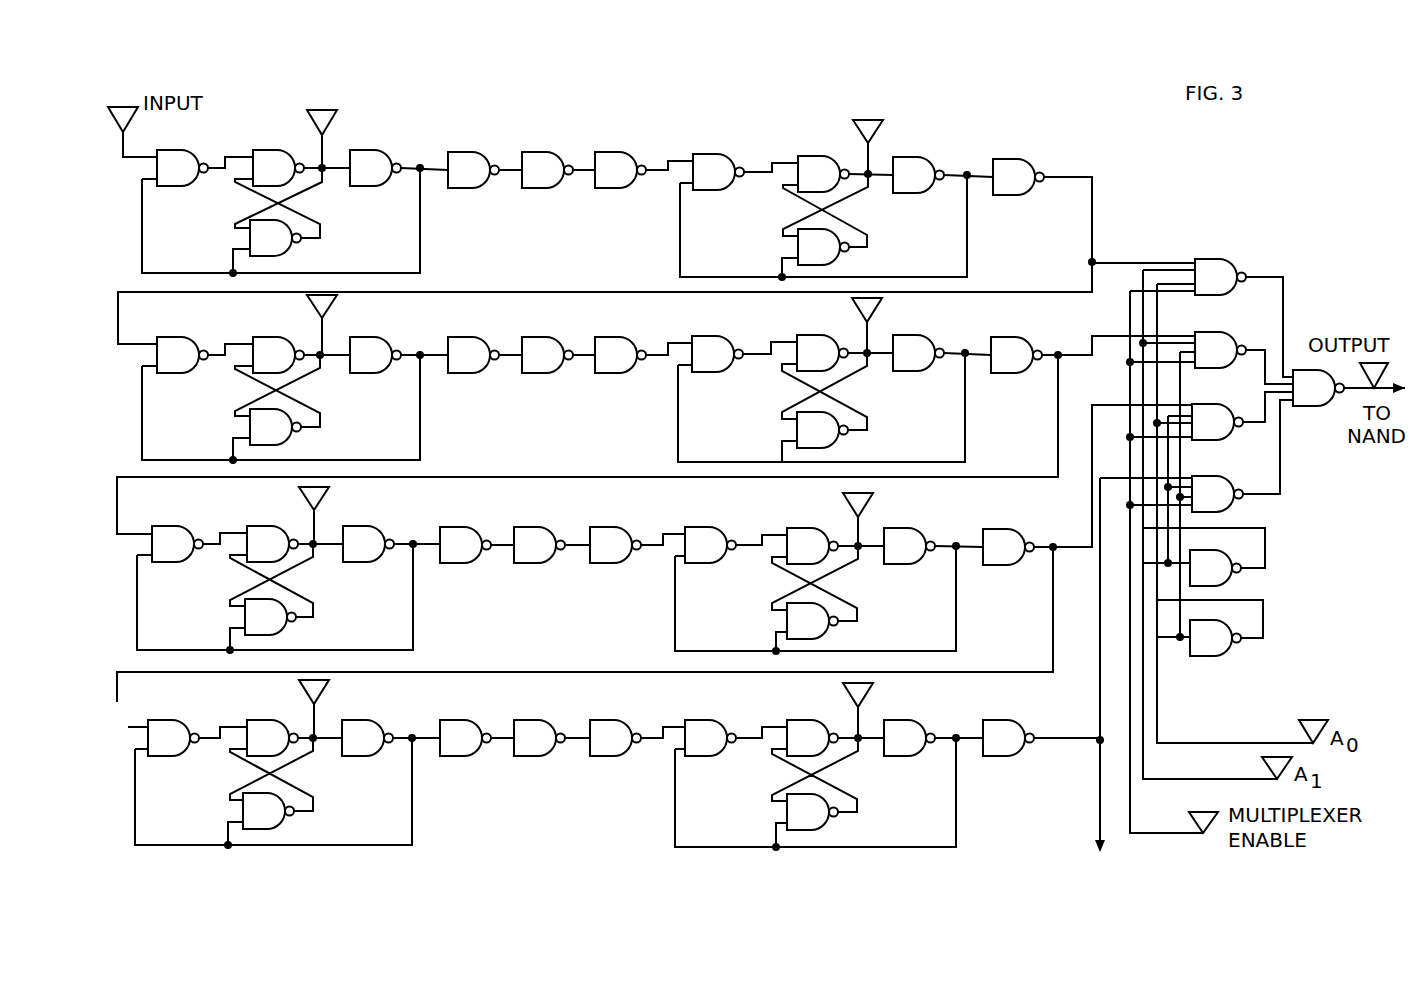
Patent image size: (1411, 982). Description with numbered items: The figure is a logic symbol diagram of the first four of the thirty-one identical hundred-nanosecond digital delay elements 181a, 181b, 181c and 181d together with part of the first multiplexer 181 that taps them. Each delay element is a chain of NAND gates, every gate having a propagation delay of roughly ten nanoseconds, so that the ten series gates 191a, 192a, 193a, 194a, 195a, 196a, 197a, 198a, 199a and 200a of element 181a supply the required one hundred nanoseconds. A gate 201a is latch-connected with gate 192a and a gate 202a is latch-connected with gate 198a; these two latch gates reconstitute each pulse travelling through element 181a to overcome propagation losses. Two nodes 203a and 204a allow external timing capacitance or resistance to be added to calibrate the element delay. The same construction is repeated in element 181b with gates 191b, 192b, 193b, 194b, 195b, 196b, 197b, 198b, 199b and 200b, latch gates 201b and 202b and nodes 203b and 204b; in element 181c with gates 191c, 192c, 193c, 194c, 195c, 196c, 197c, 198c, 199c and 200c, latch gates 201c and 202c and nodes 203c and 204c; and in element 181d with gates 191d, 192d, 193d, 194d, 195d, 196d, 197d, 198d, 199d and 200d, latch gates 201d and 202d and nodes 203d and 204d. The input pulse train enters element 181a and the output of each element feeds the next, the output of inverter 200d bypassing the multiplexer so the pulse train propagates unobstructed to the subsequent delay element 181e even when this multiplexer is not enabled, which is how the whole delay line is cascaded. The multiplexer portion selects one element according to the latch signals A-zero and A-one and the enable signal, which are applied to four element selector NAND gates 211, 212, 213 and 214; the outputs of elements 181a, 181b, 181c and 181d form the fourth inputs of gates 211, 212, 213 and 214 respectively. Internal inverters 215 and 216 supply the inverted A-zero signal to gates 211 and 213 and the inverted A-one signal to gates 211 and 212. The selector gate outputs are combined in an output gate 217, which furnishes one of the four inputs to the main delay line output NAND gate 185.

The first multiplexer 181 is at (1305, 277).
The delay element 181a is at (612, 120).
The delay element 181b is at (605, 376).
The delay element 181c is at (614, 571).
The delay element 181d is at (614, 765).
The next stage 181e is at (1087, 871).
The main delay line output NAND gate 185 is at (1377, 459).
The NAND gate 191a is at (161, 150).
The NAND gate 192a is at (294, 150).
The NAND gate 193a is at (350, 150).
The NAND gate 194a is at (493, 152).
The NAND gate 195a is at (512, 152).
The NAND gate 196a is at (592, 152).
The NAND gate 197a is at (739, 154).
The NAND gate 198a is at (836, 156).
The NAND gate 199a is at (895, 157).
The NAND gate 200a is at (986, 159).
The latch gate 201a is at (288, 252).
The latch gate 202a is at (836, 260).
The node 203a is at (332, 110).
The node 204a is at (870, 120).
The NAND gate 191b is at (159, 337).
The NAND gate 192b is at (242, 337).
The NAND gate 193b is at (346, 337).
The NAND gate 194b is at (493, 337).
The NAND gate 195b is at (566, 337).
The NAND gate 196b is at (589, 337).
The NAND gate 197b is at (741, 337).
The NAND gate 198b is at (841, 337).
The NAND gate 199b is at (889, 337).
The NAND gate 200b is at (980, 339).
The latch gate 201b is at (289, 441).
The latch gate 202b is at (834, 443).
The node 203b is at (334, 305).
The node 204b is at (883, 305).
The NAND gate 191c is at (148, 526).
The NAND gate 192c is at (240, 526).
The NAND gate 193c is at (342, 526).
The NAND gate 194c is at (487, 527).
The NAND gate 195c is at (511, 527).
The NAND gate 196c is at (587, 527).
The NAND gate 197c is at (735, 527).
The NAND gate 198c is at (785, 528).
The NAND gate 199c is at (882, 528).
The NAND gate 200c is at (982, 529).
The latch gate 201c is at (286, 630).
The latch gate 202c is at (826, 634).
The node 203c is at (330, 493).
The node 204c is at (871, 495).
The NAND gate 191d is at (146, 721).
The NAND gate 192d is at (241, 721).
The NAND gate 193d is at (342, 721).
The NAND gate 194d is at (485, 721).
The NAND gate 195d is at (509, 721).
The NAND gate 196d is at (585, 721).
The NAND gate 197d is at (683, 721).
The NAND gate 198d is at (835, 721).
The NAND gate 199d is at (882, 721).
The inverter 200d is at (978, 721).
The latch gate 201d is at (284, 824).
The latch gate 202d is at (826, 826).
The node 203d is at (330, 687).
The node 204d is at (869, 690).
The element selector NAND gate 211 is at (1243, 259).
The element selector NAND gate 212 is at (1225, 332).
The element selector NAND gate 213 is at (1220, 404).
The element selector NAND gate 214 is at (1218, 476).
The internal inverter 215 is at (1240, 576).
The internal inverter 216 is at (1240, 646).
The output gate 217 is at (1300, 409).